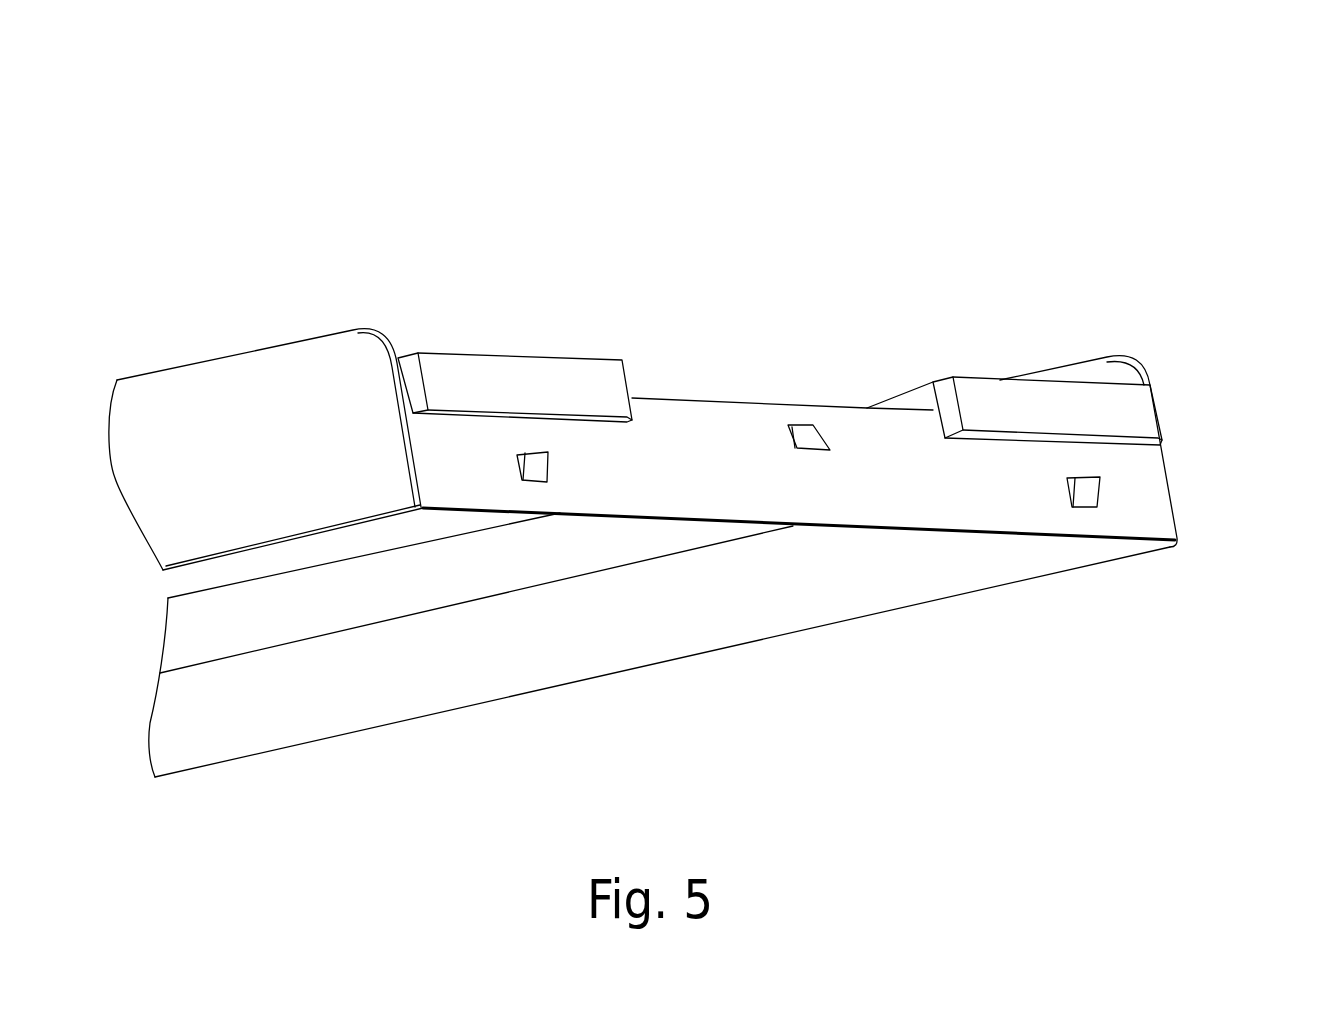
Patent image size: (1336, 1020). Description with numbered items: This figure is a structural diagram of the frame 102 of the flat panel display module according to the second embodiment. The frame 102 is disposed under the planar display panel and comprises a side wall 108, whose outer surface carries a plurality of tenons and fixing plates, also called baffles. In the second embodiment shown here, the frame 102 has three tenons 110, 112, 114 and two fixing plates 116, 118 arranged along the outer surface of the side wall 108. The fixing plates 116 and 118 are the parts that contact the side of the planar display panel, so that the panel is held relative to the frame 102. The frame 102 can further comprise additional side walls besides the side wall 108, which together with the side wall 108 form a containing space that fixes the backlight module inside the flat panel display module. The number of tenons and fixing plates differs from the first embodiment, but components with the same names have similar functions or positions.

The frame 102 is at (701, 410).
The side wall 108 is at (1148, 493).
The tenon 110 is at (540, 457).
The tenon 112 is at (808, 438).
The tenon 114 is at (1083, 497).
The fixing plate 116 is at (480, 375).
The fixing plate 118 is at (1053, 410).